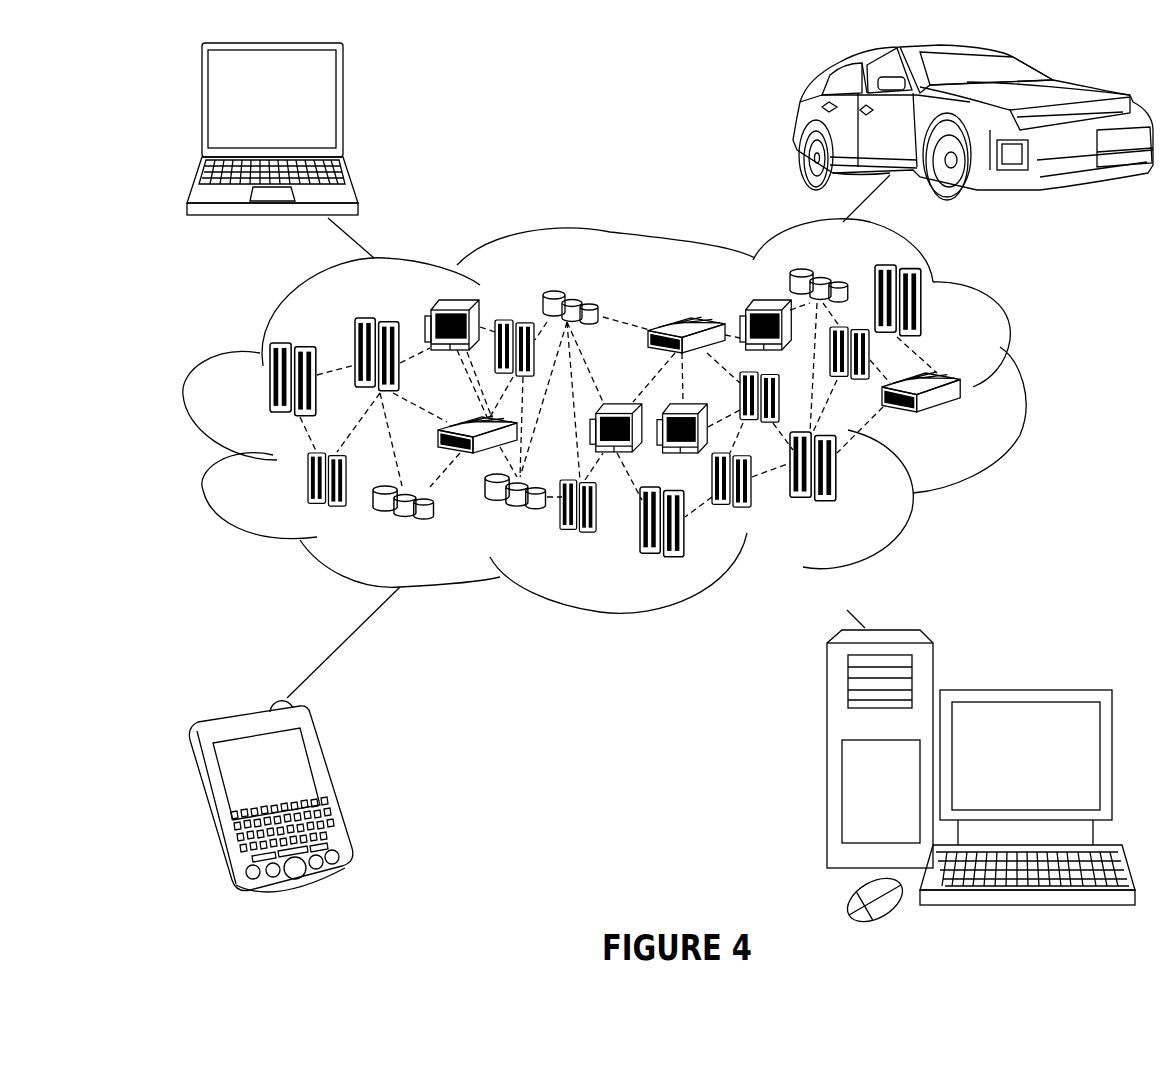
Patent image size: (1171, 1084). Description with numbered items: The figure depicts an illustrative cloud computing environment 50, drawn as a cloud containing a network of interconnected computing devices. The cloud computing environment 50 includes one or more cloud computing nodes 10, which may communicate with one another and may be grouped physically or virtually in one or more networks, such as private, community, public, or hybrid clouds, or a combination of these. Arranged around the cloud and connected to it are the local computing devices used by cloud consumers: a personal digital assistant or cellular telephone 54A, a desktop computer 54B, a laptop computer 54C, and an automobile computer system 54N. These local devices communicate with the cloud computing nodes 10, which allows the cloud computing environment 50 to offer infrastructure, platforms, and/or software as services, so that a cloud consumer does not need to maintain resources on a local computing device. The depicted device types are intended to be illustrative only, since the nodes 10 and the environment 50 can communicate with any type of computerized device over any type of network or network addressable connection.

The cloud computing node 10 is at (962, 420).
The cloud computing environment 50 is at (1023, 392).
The personal digital assistant or cellular telephone 54A is at (333, 787).
The desktop computer 54B is at (1020, 690).
The laptop computer 54C is at (343, 108).
The automobile computer system 54N is at (800, 124).